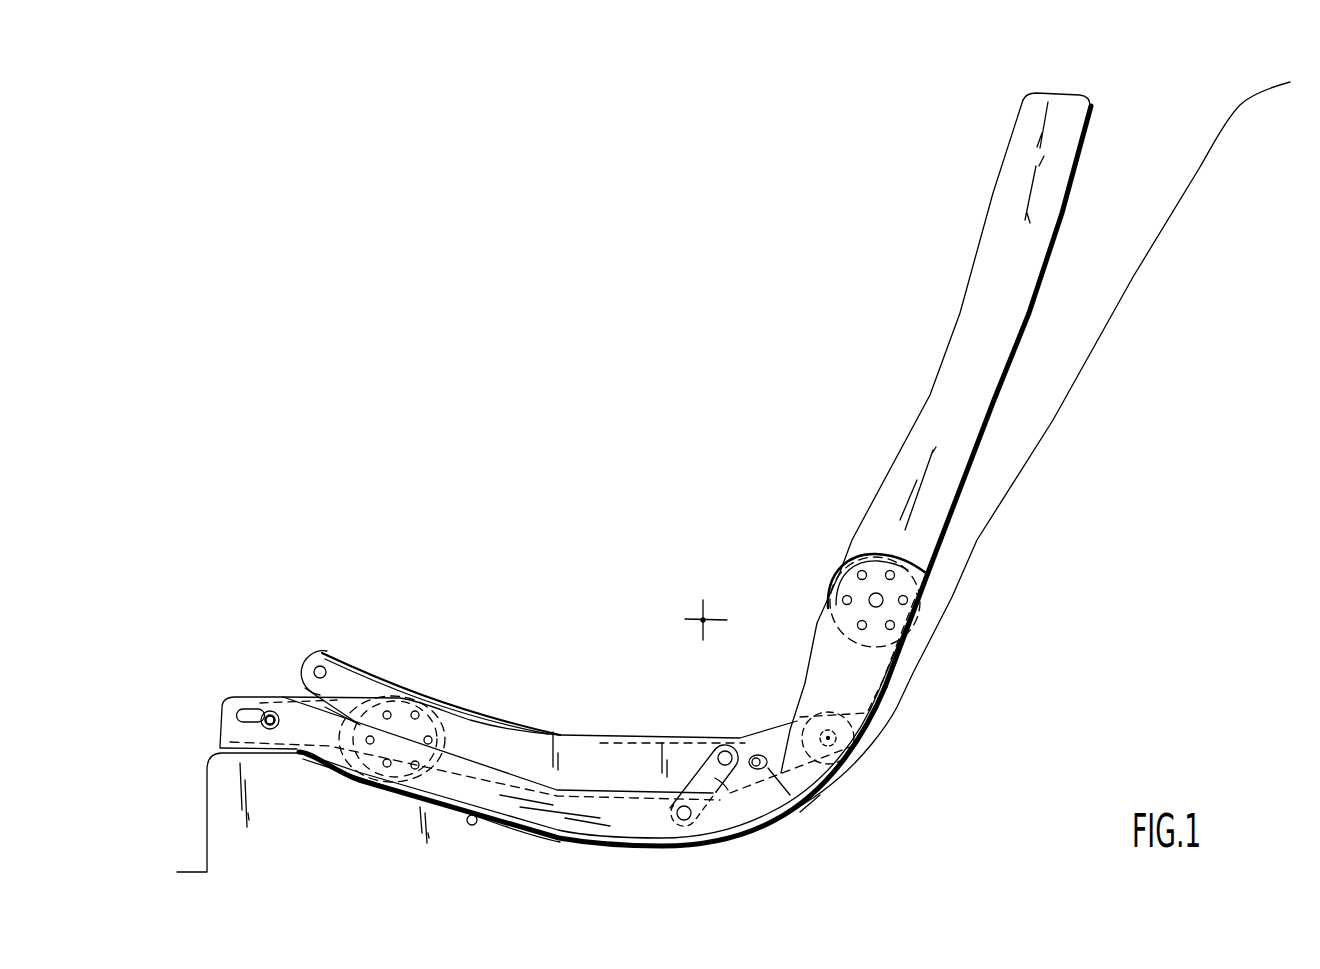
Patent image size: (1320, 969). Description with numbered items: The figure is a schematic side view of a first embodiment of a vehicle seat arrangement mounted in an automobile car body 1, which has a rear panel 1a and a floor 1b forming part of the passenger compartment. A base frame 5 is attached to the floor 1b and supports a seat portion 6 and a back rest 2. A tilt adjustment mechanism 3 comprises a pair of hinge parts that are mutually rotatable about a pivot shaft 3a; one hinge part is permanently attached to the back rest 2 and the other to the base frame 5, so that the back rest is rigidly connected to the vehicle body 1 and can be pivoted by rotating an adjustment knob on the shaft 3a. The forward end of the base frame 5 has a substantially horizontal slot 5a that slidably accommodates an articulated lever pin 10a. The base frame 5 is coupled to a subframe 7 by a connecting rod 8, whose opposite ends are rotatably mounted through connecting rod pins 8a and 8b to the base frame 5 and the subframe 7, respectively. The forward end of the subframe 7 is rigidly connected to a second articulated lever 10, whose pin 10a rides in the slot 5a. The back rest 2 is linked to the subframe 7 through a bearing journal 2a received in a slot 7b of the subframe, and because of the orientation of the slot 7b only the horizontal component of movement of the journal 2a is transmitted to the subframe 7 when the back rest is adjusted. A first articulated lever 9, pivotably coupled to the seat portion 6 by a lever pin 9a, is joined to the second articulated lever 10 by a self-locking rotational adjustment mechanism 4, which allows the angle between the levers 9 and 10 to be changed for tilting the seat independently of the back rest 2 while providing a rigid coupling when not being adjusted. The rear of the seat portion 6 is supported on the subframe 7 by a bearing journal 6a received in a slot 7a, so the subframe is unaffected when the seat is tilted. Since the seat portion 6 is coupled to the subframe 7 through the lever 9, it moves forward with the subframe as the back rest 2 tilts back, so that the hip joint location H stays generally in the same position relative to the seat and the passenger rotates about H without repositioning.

The automobile car body 1 is at (1172, 156).
The rear panel 1a is at (1095, 342).
The floor 1b is at (472, 826).
The back rest 2 is at (940, 371).
The bearing journal 2a is at (880, 766).
The tilt adjustment mechanism 3 is at (832, 579).
The pivot shaft 3a is at (882, 596).
The self-locking rotational adjustment mechanism 4 is at (417, 696).
The base frame 5 is at (604, 832).
The slot 5a is at (250, 708).
The seat portion 6 is at (460, 706).
The bearing journal 6a is at (759, 754).
The subframe 7 is at (612, 750).
The slot 7a is at (810, 802).
The slot 7b is at (886, 712).
The connecting rod 8 is at (730, 793).
The connecting rod pin 8a is at (684, 821).
The connecting rod pin 8b is at (724, 751).
The first articulated lever 9 is at (352, 680).
The lever pin 9a is at (320, 665).
The second articulated lever 10 is at (387, 695).
The articulated lever pin 10a is at (270, 731).
The hip joint location H is at (700, 621).